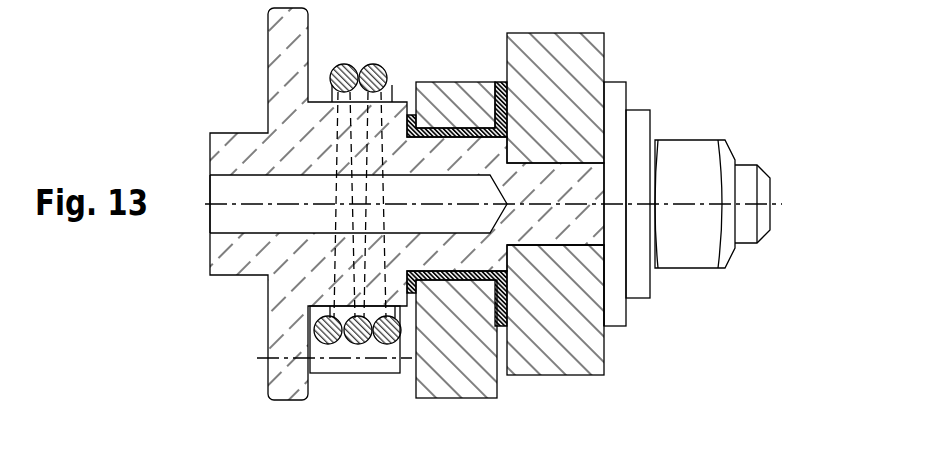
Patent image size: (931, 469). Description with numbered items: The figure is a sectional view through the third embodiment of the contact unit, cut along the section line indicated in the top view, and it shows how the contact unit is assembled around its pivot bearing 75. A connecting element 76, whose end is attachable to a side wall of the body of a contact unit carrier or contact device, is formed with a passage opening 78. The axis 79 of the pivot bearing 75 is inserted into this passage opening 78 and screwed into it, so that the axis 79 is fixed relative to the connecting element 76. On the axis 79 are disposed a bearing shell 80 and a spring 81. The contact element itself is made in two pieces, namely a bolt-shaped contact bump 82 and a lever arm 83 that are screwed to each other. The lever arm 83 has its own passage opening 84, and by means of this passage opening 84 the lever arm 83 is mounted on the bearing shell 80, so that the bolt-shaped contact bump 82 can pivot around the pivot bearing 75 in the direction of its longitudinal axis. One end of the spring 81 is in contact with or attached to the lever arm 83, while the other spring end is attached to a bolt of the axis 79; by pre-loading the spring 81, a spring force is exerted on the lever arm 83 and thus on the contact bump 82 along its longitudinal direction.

The pivot bearing 75 is at (682, 120).
The connecting element 76 is at (555, 357).
The passage opening 78 is at (604, 248).
The axis 79 is at (212, 278).
The bearing shell 80 is at (442, 128).
The spring 81 is at (344, 64).
The bolt-shaped contact bump 82 is at (236, 468).
The lever arm 83 is at (458, 373).
The passage opening 84 is at (607, 370).